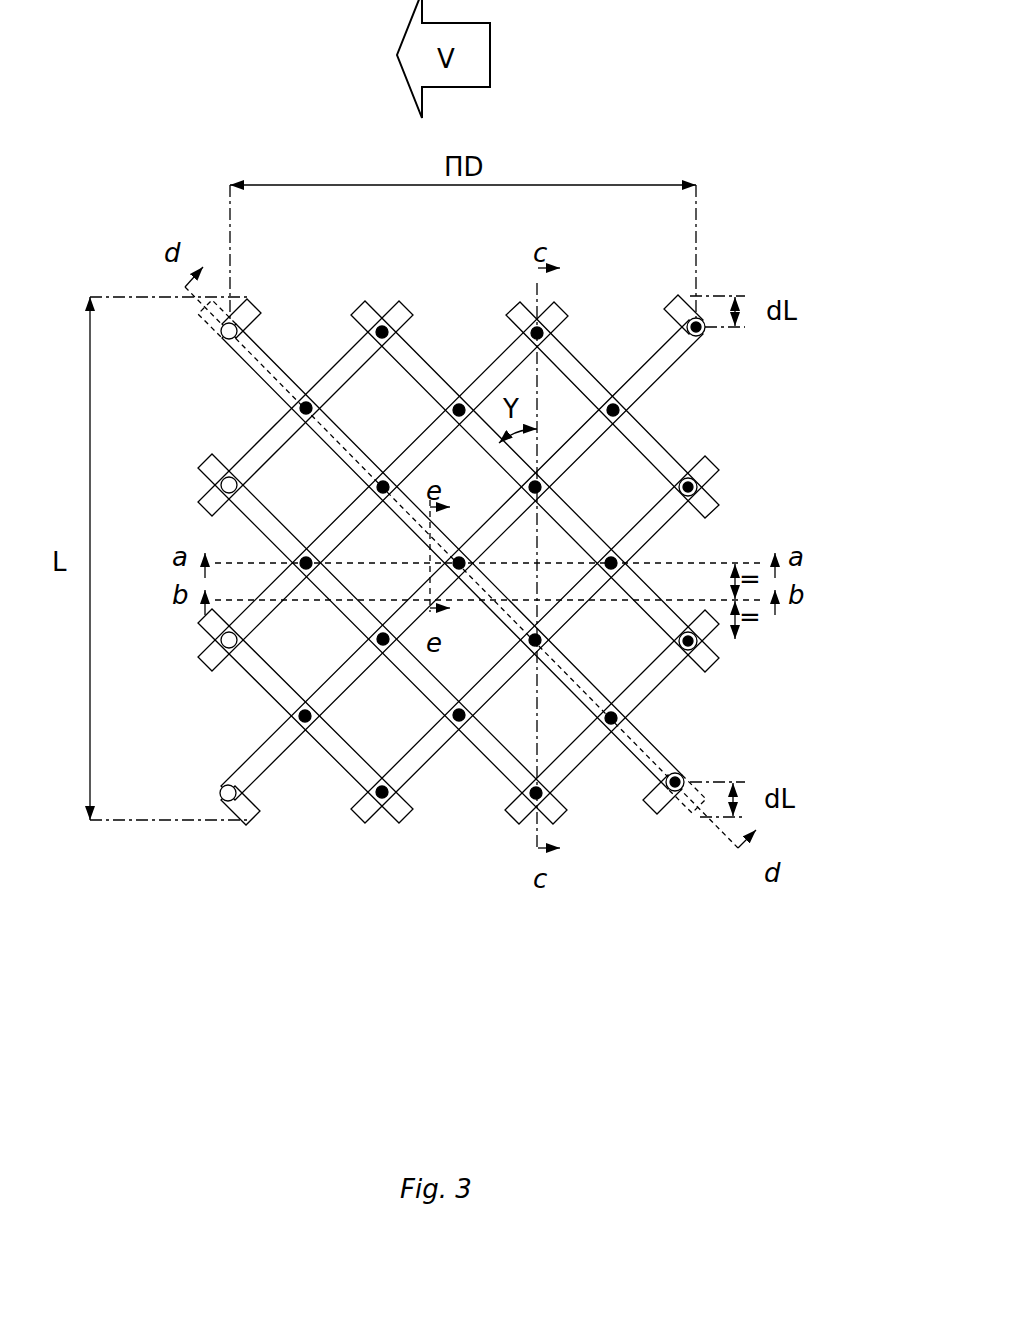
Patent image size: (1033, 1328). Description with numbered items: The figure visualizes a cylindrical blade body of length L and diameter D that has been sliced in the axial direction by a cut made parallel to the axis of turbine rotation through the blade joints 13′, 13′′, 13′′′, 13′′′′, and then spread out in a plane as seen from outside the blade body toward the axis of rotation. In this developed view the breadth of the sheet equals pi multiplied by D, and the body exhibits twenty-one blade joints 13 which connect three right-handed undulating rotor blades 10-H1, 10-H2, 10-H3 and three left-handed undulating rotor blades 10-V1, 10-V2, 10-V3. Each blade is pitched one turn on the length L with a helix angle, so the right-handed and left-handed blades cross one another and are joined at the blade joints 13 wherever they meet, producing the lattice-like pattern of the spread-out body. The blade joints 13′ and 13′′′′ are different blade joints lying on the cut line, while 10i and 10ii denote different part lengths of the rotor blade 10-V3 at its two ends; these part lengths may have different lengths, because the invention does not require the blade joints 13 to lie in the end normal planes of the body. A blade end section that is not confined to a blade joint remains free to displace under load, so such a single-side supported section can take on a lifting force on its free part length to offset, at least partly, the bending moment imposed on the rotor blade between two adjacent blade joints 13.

The left-handed undulating rotor blade 10-V1 is at (420, 347).
The left-handed undulating rotor blade 10-V2 is at (667, 443).
The left-handed undulating rotor blade 10-V3 is at (264, 385).
The right-handed undulating rotor blade 10-H1 is at (264, 433).
The right-handed undulating rotor blade 10-H2 is at (478, 362).
The right-handed undulating rotor blade 10-H3 is at (264, 740).
The part length of the rotor blade 10i is at (226, 299).
The part length of the rotor blade 10ii is at (241, 812).
The blade joint 13 is at (623, 409).
The blade joint 13′ is at (220, 333).
The blade joint 13′′ is at (220, 487).
The blade joint 13′′′ is at (220, 640).
The blade joint 13′′′′ is at (219, 793).